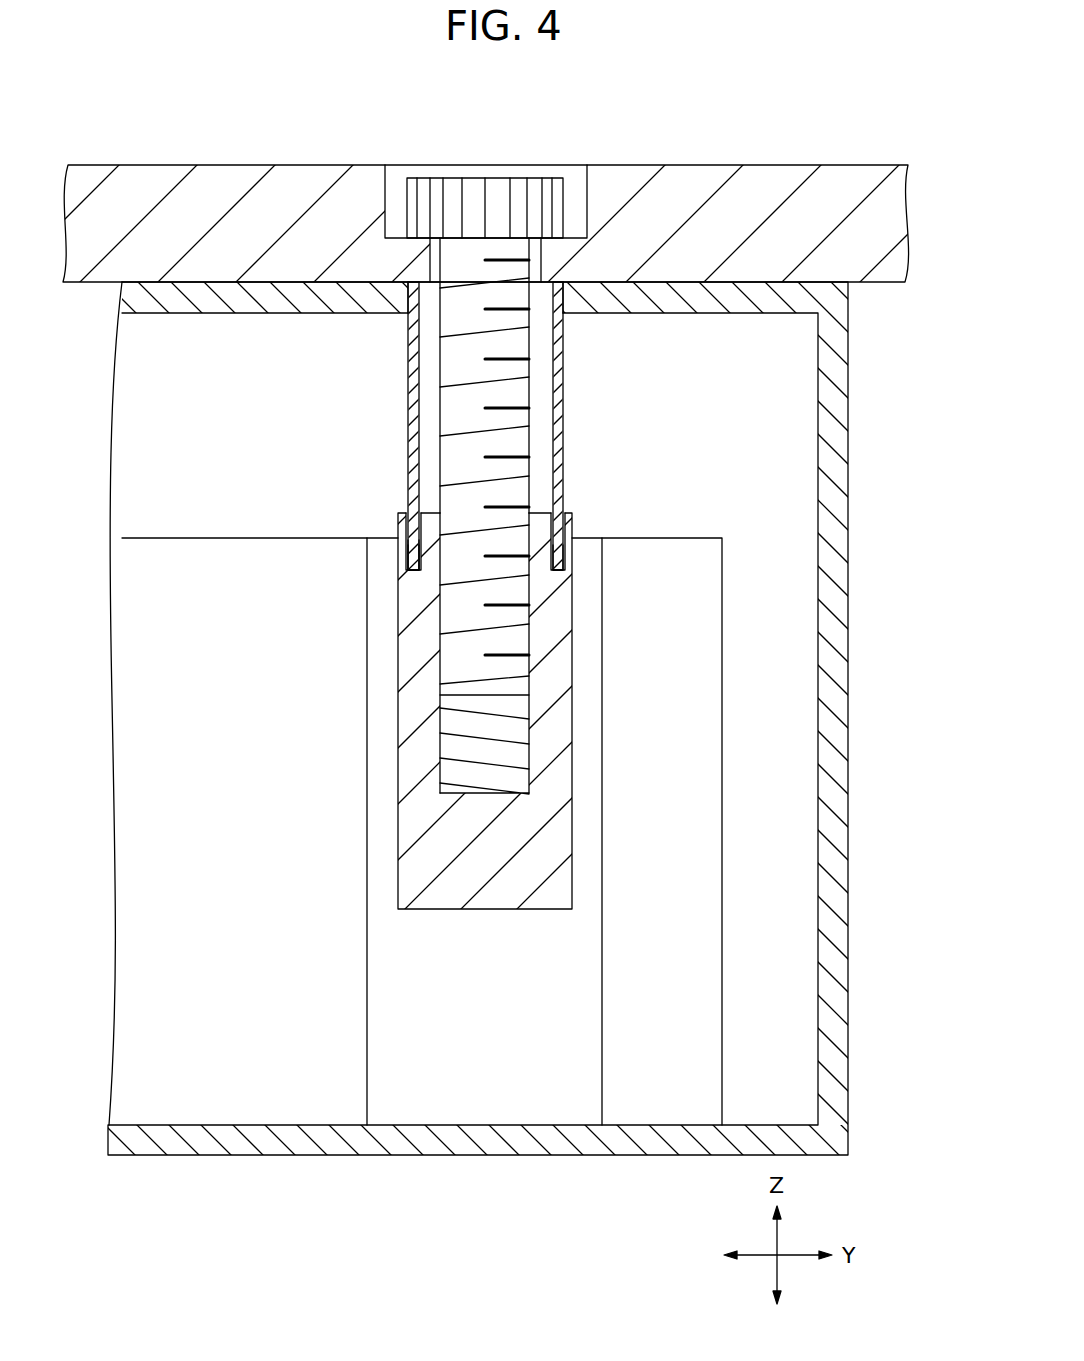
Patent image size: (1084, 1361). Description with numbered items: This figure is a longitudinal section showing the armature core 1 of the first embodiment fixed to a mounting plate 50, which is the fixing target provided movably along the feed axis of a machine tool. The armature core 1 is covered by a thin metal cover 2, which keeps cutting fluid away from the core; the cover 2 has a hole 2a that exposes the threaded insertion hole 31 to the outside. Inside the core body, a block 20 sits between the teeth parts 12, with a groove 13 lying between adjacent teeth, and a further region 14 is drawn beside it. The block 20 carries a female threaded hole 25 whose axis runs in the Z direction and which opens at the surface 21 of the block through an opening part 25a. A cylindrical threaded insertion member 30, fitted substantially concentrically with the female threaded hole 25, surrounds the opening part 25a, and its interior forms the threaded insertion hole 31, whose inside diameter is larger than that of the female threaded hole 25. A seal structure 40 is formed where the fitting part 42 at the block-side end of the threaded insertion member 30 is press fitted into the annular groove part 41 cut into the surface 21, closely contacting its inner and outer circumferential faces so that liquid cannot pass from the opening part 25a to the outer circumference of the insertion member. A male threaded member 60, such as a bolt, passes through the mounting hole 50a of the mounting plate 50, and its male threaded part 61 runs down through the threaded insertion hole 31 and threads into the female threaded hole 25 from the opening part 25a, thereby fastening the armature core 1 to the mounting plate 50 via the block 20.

The armature core 1 is at (170, 450).
The cover 2 is at (542, 633).
The hole 2a is at (555, 300).
The teeth part 12 is at (482, 1073).
The groove 13 is at (232, 1073).
The right block 14 is at (790, 565).
The block 20 is at (491, 651).
The surface 21 is at (428, 508).
The female threaded hole 25 is at (460, 748).
The opening part 25a is at (530, 510).
The threaded insertion member 30 is at (489, 350).
The threaded insertion hole 31 is at (542, 343).
The seal structure 40 is at (588, 522).
The groove part 41 is at (563, 537).
The fitting part 42 is at (563, 553).
The mounting plate 50 is at (491, 167).
The mounting hole 50a is at (433, 262).
The male threaded member 60 is at (446, 372).
The male threaded part 61 is at (460, 425).